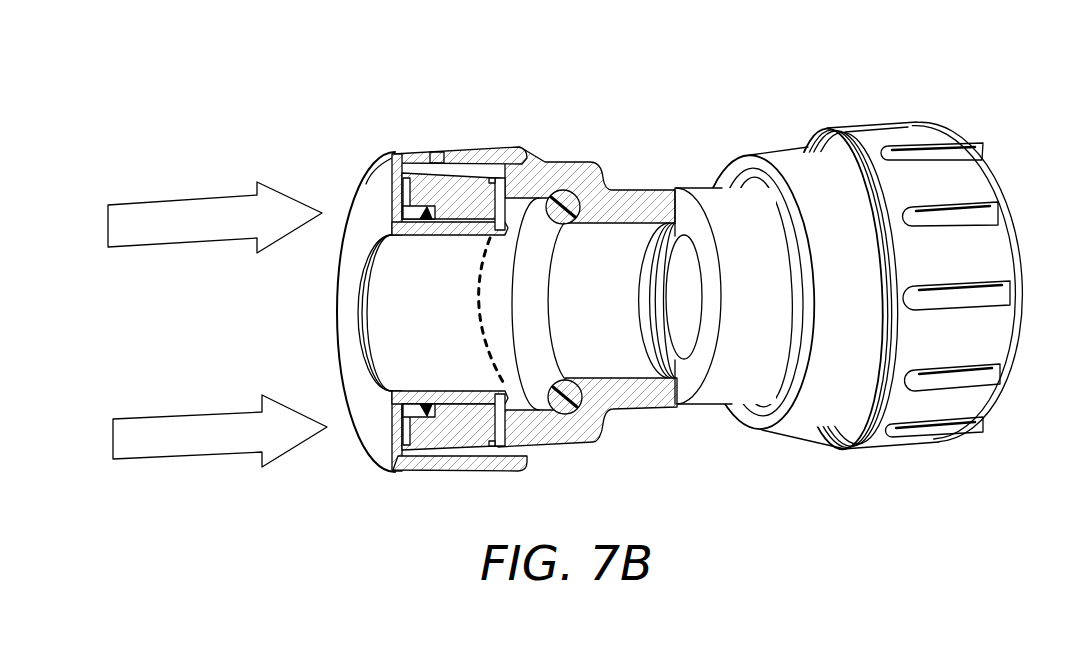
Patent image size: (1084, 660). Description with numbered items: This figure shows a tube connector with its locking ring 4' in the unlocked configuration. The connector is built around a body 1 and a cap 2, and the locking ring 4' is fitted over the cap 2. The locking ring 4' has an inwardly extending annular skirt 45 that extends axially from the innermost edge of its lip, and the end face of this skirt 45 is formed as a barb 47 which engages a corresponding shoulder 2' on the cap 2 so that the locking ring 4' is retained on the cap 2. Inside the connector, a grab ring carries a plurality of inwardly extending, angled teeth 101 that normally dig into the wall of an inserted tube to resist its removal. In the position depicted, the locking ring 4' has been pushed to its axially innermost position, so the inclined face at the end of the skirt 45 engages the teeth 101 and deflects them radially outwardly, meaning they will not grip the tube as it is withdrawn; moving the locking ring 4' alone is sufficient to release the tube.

The body 1 is at (568, 167).
The cap 2 is at (451, 276).
The shoulder 2' is at (491, 274).
The locking ring 4' is at (420, 309).
The annular skirt 45 is at (440, 318).
The barb 47 is at (496, 404).
The teeth 101 is at (480, 312).